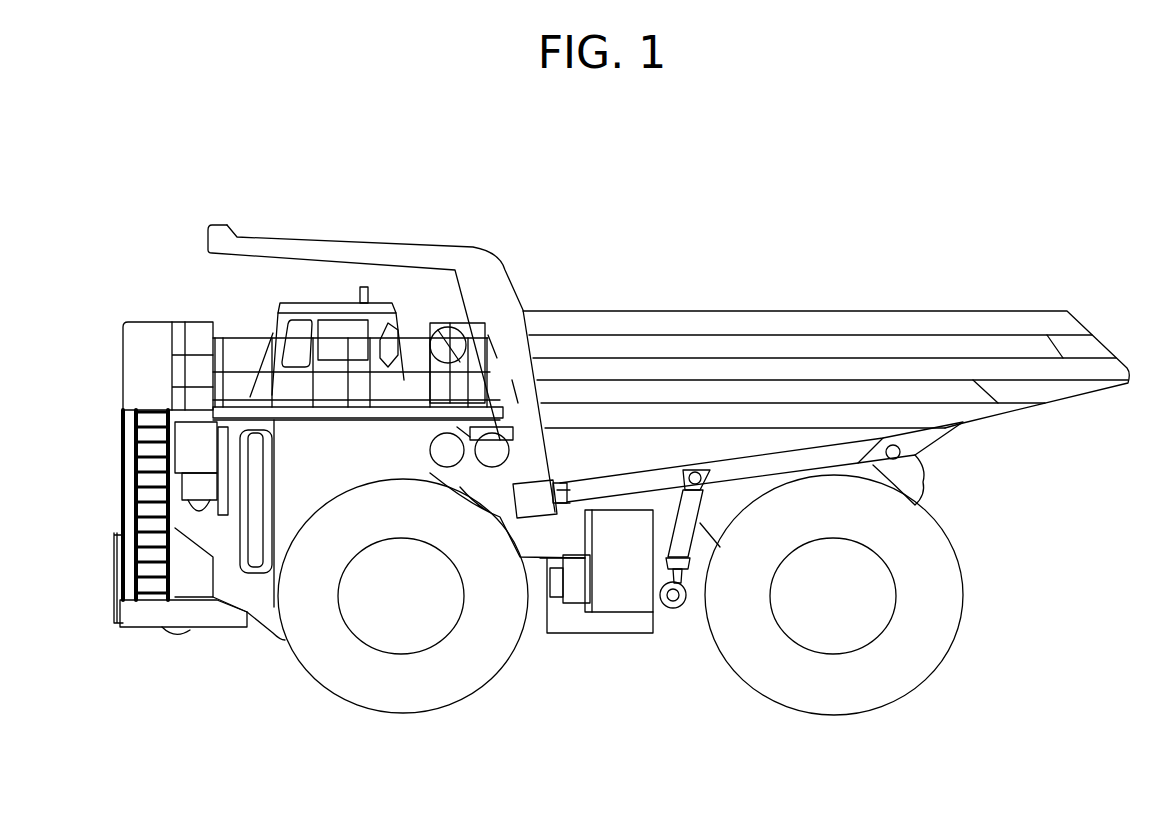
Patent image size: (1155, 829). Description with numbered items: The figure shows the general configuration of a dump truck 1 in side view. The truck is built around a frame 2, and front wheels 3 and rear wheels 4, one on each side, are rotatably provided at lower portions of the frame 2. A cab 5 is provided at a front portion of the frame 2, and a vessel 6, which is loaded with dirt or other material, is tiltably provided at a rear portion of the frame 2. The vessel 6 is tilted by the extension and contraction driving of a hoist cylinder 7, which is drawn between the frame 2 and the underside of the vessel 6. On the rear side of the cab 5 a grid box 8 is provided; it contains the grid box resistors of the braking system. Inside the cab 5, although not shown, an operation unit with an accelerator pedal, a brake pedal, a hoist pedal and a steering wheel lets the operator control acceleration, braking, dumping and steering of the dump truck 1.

The dump truck 1 is at (607, 247).
The frame 2 is at (693, 483).
The front wheels 3 is at (303, 670).
The rear wheels 4 is at (923, 677).
The cab 5 is at (300, 303).
The vessel 6 is at (905, 311).
The hoist cylinder 7 is at (695, 505).
The grid box 8 is at (440, 307).